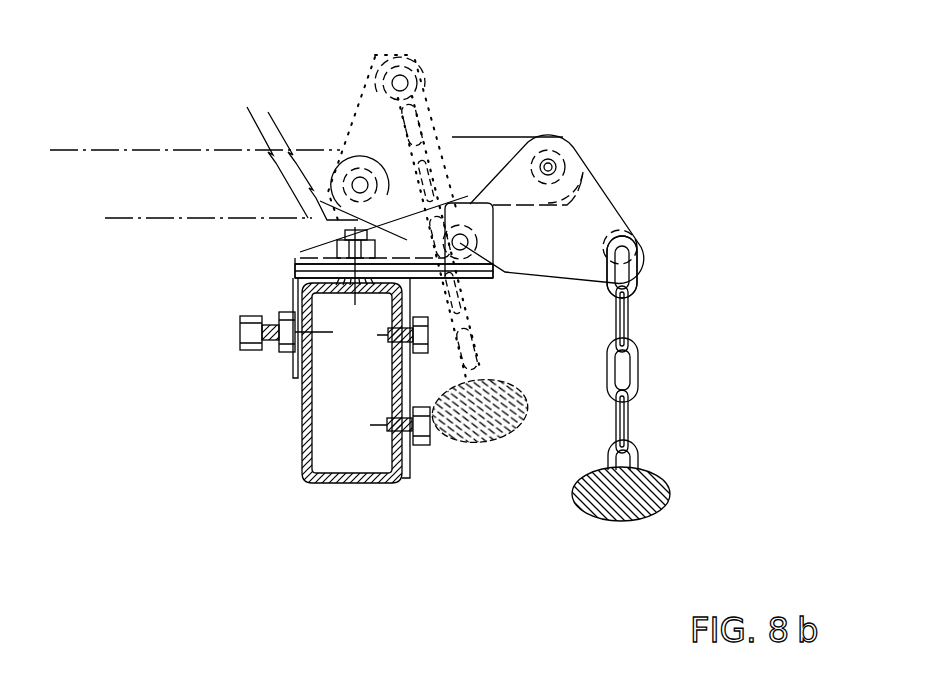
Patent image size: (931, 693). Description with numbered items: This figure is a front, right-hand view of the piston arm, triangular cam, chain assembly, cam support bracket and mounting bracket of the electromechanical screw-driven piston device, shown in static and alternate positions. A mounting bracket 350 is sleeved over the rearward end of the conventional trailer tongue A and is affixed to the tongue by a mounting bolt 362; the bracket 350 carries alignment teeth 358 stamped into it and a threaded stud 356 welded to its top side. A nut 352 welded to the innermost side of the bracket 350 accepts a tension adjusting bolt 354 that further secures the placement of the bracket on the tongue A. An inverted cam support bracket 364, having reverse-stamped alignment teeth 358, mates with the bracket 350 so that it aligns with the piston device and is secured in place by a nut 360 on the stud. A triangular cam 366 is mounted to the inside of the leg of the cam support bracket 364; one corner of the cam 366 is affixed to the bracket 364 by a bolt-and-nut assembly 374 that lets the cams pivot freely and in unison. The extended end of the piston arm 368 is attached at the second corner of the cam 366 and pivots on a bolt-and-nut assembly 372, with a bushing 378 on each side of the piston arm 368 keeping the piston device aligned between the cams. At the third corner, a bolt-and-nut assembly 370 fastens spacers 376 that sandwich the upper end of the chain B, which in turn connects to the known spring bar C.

The bracket 350 is at (300, 284).
The nut 352 is at (290, 352).
The tension adjusting bolt 354 is at (240, 332).
The threaded stud 356 is at (340, 231).
The alignment teeth 358 is at (292, 273).
The nut 360 is at (297, 258).
The mounting bolt 362 is at (417, 407).
The cam support bracket 364 is at (293, 262).
The triangular cam 366 is at (587, 208).
The piston arm 368 is at (472, 148).
The bolt-and-nut assembly 370 is at (625, 258).
The bolt-and-nut assembly 372 is at (552, 160).
The bolt-and-nut assembly 374 is at (466, 250).
The spacer 376 is at (622, 245).
The bushing 378 is at (545, 165).
The trailer tongue A is at (325, 428).
The chain B is at (627, 330).
The spring bar C is at (665, 487).